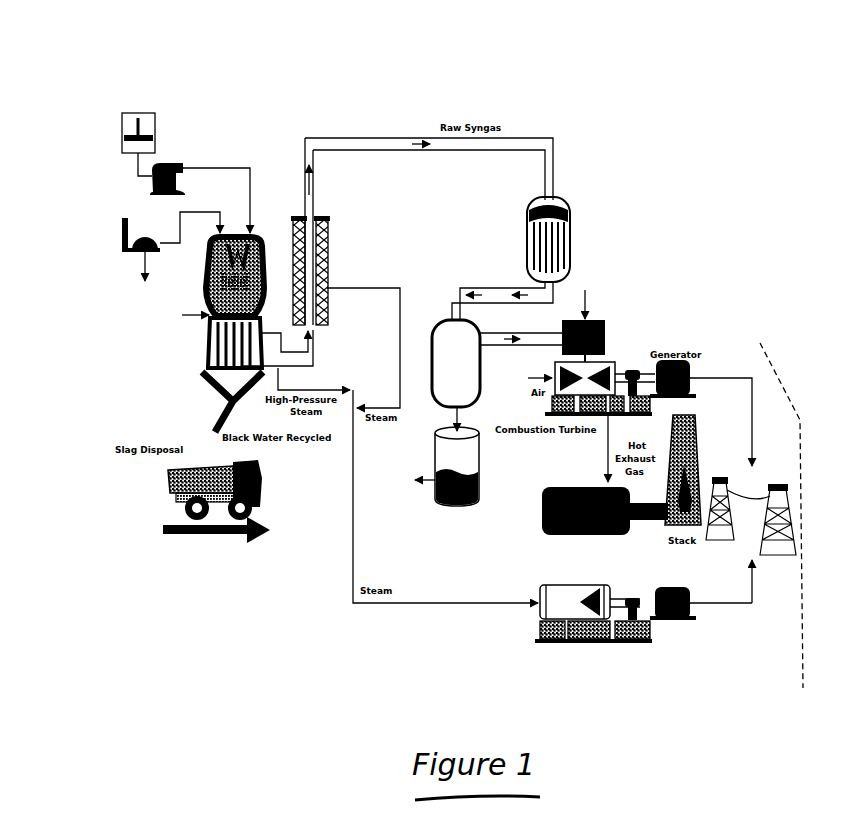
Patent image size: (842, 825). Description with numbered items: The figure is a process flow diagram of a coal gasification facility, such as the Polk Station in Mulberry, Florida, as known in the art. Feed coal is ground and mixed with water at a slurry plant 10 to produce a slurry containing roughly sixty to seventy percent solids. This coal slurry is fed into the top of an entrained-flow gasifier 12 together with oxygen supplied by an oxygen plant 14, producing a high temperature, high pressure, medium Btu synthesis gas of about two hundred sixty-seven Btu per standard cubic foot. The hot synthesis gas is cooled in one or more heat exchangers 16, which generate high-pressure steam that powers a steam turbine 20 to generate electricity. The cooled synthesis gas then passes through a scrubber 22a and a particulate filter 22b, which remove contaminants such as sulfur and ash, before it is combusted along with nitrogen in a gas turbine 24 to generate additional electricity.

The slurry plant 10 is at (157, 83).
The entrained-flow gasifier 12 is at (255, 236).
The oxygen plant 14 is at (122, 233).
The heat exchanger 16 is at (325, 222).
The steam turbine 20 is at (638, 650).
The scrubber 22a is at (562, 206).
The particulate filter 22b is at (435, 304).
The gas turbine 24 is at (603, 323).